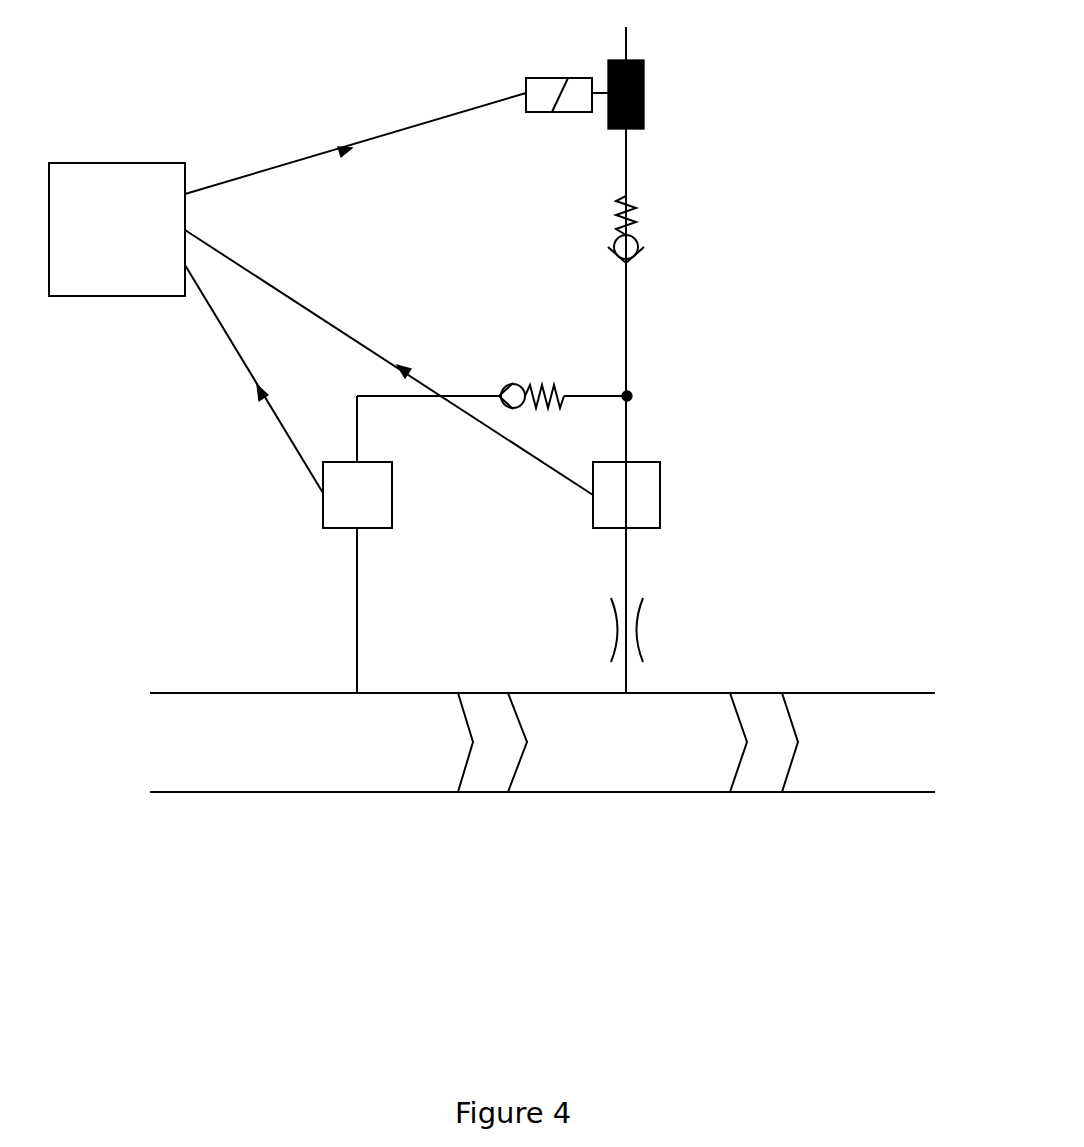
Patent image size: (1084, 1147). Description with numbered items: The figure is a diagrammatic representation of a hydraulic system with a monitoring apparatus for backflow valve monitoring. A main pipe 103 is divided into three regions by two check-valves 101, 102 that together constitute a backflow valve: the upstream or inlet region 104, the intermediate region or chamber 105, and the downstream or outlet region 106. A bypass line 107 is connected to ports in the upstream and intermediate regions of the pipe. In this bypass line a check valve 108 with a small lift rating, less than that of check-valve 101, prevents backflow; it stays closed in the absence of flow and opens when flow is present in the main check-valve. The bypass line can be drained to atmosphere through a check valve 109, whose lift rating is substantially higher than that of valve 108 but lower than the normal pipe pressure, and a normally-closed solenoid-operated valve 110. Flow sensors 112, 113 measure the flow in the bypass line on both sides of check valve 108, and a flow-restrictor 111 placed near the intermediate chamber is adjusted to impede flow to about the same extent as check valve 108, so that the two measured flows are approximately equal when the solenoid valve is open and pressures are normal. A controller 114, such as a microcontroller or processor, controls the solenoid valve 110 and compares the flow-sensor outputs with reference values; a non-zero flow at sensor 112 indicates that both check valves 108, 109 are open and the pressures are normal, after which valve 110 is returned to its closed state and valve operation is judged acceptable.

The check-valve 101 is at (492, 747).
The check-valve 102 is at (765, 745).
The main pipe 103 is at (252, 792).
The upstream or inlet region 104 is at (323, 740).
The intermediate region or chamber 105 is at (627, 740).
The downstream or outlet region 106 is at (867, 745).
The bypass line 107 is at (362, 627).
The check valve 108 is at (538, 368).
The check valve 109 is at (660, 262).
The solenoid-operated valve 110 is at (646, 95).
The flow-restrictor 111 is at (642, 627).
The flow sensor 112 is at (358, 502).
The flow sensor 113 is at (640, 493).
The controller 114 is at (83, 257).